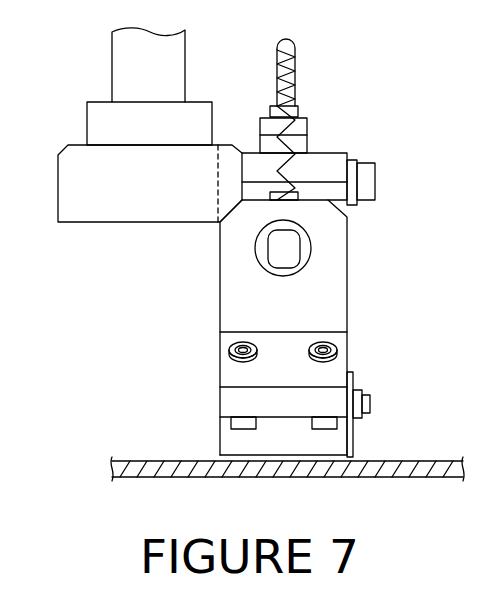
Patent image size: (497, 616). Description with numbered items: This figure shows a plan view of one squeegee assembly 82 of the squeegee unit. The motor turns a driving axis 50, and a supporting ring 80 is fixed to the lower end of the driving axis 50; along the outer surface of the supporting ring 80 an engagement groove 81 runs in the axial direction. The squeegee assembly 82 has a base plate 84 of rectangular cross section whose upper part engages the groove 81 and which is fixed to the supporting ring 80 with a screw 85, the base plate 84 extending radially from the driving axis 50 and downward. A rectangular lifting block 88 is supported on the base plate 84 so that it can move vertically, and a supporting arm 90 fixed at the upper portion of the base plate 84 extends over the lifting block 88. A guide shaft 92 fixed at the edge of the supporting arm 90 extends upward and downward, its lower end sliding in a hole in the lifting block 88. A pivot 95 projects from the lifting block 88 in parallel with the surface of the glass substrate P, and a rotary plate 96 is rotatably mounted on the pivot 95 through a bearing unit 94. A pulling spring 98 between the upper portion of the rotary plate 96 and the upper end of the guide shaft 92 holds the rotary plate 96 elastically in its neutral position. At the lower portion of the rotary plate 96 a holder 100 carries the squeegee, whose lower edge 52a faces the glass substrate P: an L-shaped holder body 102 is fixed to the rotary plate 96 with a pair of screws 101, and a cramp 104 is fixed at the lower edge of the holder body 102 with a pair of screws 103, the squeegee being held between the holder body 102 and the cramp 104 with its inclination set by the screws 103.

The driving axis 50 is at (117, 69).
The supporting ring 80 is at (90, 213).
The engagement groove 81 is at (222, 168).
The squeegee assembly 82 is at (418, 158).
The base plate 84 is at (323, 160).
The screw 85 is at (368, 162).
The lifting block 88 is at (337, 198).
The supporting arm 90 is at (308, 118).
The guide shaft 92 is at (289, 45).
The bearing unit 94 is at (312, 262).
The pivot 95 is at (293, 243).
The rotary plate 96 is at (338, 305).
The pulling spring 98 is at (276, 54).
The holder 100 is at (208, 370).
The screw 101 is at (230, 350).
The holder body 102 is at (352, 340).
The screw 103 is at (230, 421).
The cramp 104 is at (225, 448).
The strip 52a is at (340, 454).
The glass substrate P is at (450, 462).